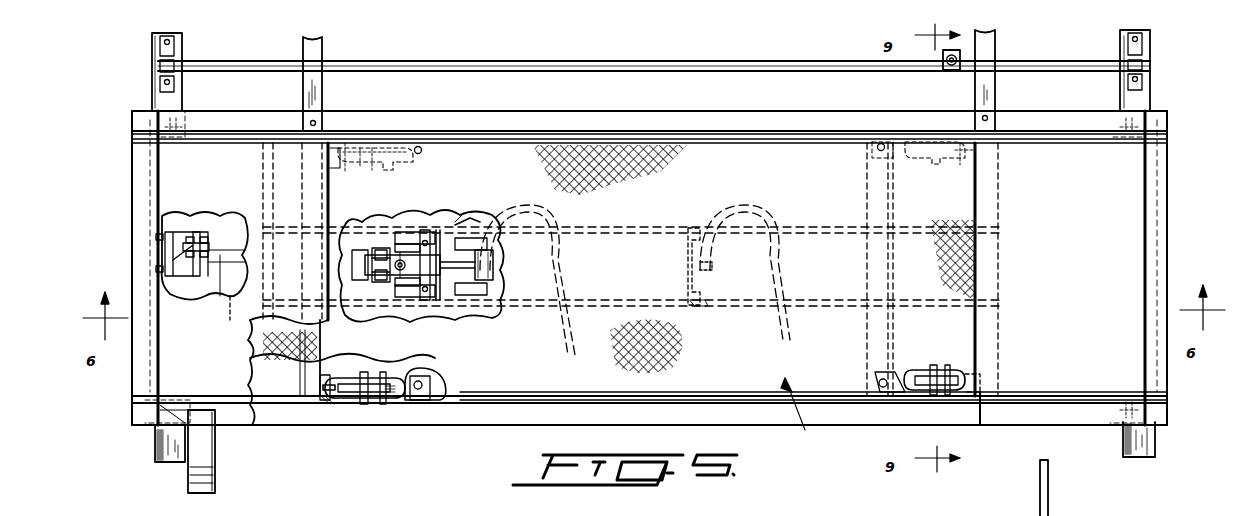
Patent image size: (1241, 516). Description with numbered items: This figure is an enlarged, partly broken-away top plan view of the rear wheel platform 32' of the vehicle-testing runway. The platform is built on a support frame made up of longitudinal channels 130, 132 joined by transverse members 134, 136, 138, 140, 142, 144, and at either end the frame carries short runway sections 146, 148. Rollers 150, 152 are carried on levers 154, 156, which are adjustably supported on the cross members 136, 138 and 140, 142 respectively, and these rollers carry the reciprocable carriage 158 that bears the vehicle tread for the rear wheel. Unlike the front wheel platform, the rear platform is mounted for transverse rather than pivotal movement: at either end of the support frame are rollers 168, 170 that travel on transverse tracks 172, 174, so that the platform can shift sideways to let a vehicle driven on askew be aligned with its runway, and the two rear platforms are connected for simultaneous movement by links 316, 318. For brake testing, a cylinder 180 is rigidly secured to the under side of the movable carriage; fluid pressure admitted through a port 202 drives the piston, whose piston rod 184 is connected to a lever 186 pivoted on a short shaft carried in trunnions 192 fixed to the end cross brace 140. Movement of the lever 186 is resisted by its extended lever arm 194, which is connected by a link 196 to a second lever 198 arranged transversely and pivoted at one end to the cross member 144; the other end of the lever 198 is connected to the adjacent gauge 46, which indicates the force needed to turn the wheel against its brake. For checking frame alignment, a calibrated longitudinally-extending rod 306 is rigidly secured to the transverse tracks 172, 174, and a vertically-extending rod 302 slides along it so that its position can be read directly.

The rear wheel platform 32' is at (799, 415).
The gauge 46 is at (215, 468).
The longitudinal channel 130 is at (1053, 110).
The longitudinal channel 132 is at (1094, 410).
The transverse member 134 is at (1170, 402).
The transverse member 136 is at (1003, 278).
The transverse member 138 is at (870, 318).
The transverse member 140 is at (446, 386).
The transverse member 142 is at (302, 382).
The transverse member 144 is at (140, 376).
The short runway section 146 is at (1050, 270).
The short runway section 148 is at (264, 231).
The roller 150 is at (383, 168).
The roller 152 is at (958, 162).
The lever 154 is at (878, 156).
The lever 156 is at (343, 172).
The reciprocable carriage 158 is at (265, 350).
The roller 168 is at (172, 120).
The roller 170 is at (1130, 134).
The transverse track 172 is at (178, 47).
The transverse track 174 is at (1152, 50).
The cylinder 180 is at (652, 238).
The piston rod 184 is at (492, 264).
The lever 186 is at (378, 292).
The trunnion 192 is at (404, 232).
The extended lever arm 194 is at (205, 266).
The link 196 is at (196, 268).
The second lever 198 is at (198, 322).
The port 202 is at (706, 270).
The vertically-extending rod 302 is at (946, 70).
The longitudinally-extending rod 306 is at (800, 64).
The link 316 is at (325, 53).
The link 318 is at (998, 45).